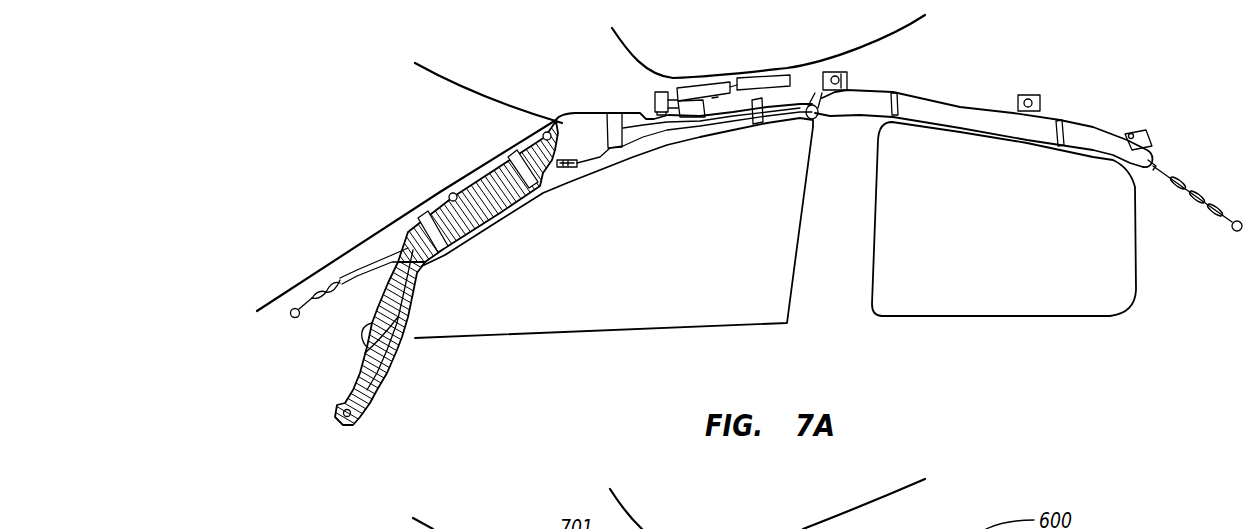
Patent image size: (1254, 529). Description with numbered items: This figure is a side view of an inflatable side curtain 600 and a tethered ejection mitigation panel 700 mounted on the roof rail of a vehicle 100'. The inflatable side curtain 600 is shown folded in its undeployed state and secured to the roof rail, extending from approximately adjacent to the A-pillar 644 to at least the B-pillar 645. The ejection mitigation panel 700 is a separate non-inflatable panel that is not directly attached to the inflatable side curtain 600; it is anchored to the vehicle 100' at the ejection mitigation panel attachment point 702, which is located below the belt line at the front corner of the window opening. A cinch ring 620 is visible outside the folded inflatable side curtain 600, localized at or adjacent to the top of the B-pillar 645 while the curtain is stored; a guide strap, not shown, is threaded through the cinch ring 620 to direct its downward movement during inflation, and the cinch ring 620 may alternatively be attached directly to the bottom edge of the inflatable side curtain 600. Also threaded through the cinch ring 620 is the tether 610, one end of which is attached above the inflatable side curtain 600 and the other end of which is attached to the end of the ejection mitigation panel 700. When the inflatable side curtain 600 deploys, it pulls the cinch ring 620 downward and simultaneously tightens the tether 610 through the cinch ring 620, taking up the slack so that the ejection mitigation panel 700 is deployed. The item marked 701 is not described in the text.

The vehicle 100' is at (755, 193).
The inflatable side curtain 600 is at (965, 97).
The tether 610 is at (667, 145).
The cinch ring 620 is at (828, 128).
The A-pillar 644 is at (318, 270).
The B-pillar 645 is at (833, 251).
The ejection mitigation panel 700 is at (481, 210).
The label 701 is at (569, 150).
The ejection mitigation panel attachment point 702 is at (333, 424).